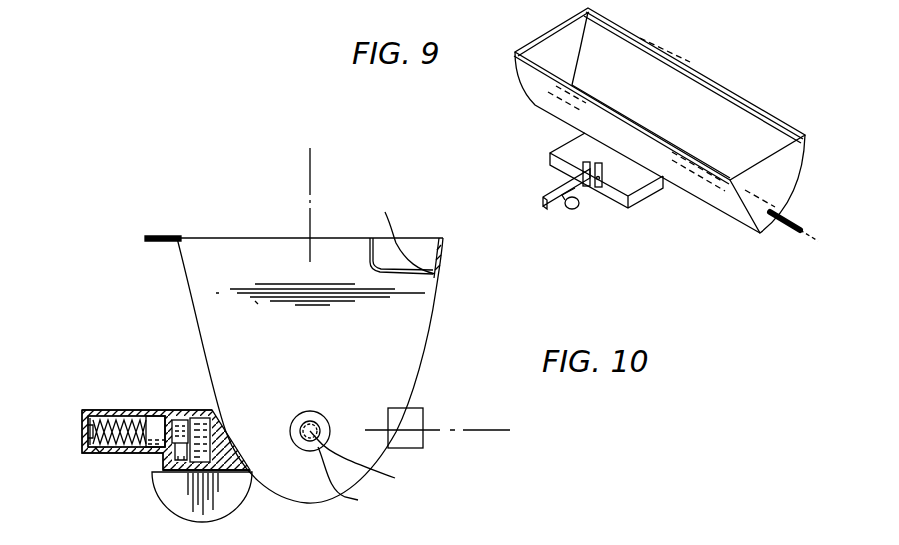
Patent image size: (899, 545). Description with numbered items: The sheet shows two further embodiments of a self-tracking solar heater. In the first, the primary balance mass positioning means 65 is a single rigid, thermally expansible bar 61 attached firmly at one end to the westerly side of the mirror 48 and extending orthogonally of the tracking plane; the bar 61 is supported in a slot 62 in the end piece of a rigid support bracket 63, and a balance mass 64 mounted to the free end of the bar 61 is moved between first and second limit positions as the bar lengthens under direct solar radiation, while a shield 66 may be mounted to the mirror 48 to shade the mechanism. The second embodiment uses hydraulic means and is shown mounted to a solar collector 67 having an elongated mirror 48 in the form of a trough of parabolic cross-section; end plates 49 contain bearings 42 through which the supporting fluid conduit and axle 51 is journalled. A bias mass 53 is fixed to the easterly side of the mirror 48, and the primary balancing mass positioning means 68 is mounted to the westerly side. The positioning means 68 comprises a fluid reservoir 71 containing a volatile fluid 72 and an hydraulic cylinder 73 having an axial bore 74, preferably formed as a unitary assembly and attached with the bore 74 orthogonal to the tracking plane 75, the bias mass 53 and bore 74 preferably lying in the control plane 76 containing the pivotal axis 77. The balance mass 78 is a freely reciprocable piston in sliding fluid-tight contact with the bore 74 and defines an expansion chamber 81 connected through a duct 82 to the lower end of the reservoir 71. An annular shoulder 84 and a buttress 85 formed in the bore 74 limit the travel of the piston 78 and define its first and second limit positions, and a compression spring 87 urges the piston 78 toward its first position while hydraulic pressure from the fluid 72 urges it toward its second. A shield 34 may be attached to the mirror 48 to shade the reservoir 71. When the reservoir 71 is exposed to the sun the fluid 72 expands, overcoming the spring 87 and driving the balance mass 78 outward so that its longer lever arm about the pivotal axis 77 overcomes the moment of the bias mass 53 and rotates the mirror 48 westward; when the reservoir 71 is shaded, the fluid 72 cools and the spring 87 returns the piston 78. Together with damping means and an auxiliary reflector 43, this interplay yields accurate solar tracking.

In FIG. 9, the shield 34 is at (156, 236).
In FIG. 9, the bearings 42 is at (320, 399).
In FIG. 9, the auxiliary reflector 43 is at (166, 495).
In FIG. 9, the mirror 48 is at (392, 233).
In FIG. 10, the mirror 48 is at (710, 104).
In FIG. 9, the end plates 49 is at (224, 236).
In FIG. 10, the end plates 49 is at (790, 160).
In FIG. 9, the supporting fluid conduit and axle 51 is at (316, 427).
In FIG. 10, the supporting fluid conduit and axle 51 is at (798, 222).
In FIG. 9, the bias mass 53 is at (425, 416).
In FIG. 10, the thermally expansible bar 61 is at (609, 186).
In FIG. 10, the slot 62 is at (545, 184).
In FIG. 10, the support bracket 63 is at (637, 193).
In FIG. 10, the balance mass 64 is at (566, 211).
In FIG. 10, the primary balance mass positioning means 65 is at (536, 174).
In FIG. 10, the shield 66 is at (590, 112).
In FIG. 9, the solar collector 67 is at (325, 218).
In FIG. 9, the primary balancing mass positioning means 68 is at (98, 391).
In FIG. 9, the fluid reservoir 71 is at (202, 422).
In FIG. 9, the volatile fluid 72 is at (232, 478).
In FIG. 9, the hydraulic cylinder 73 is at (82, 412).
In FIG. 9, the axial bore 74 is at (100, 418).
In FIG. 9, the tracking plane 75 is at (310, 171).
In FIG. 9, the control plane 76 is at (490, 431).
In FIG. 9, the pivotal axis 77 is at (368, 463).
In FIG. 9, the balance mass 78 is at (158, 448).
In FIG. 9, the expansion chamber 81 is at (177, 421).
In FIG. 9, the duct 82 is at (180, 476).
In FIG. 9, the annular shoulder 84 is at (158, 418).
In FIG. 9, the buttress 85 is at (86, 432).
In FIG. 9, the compression spring 87 is at (103, 447).